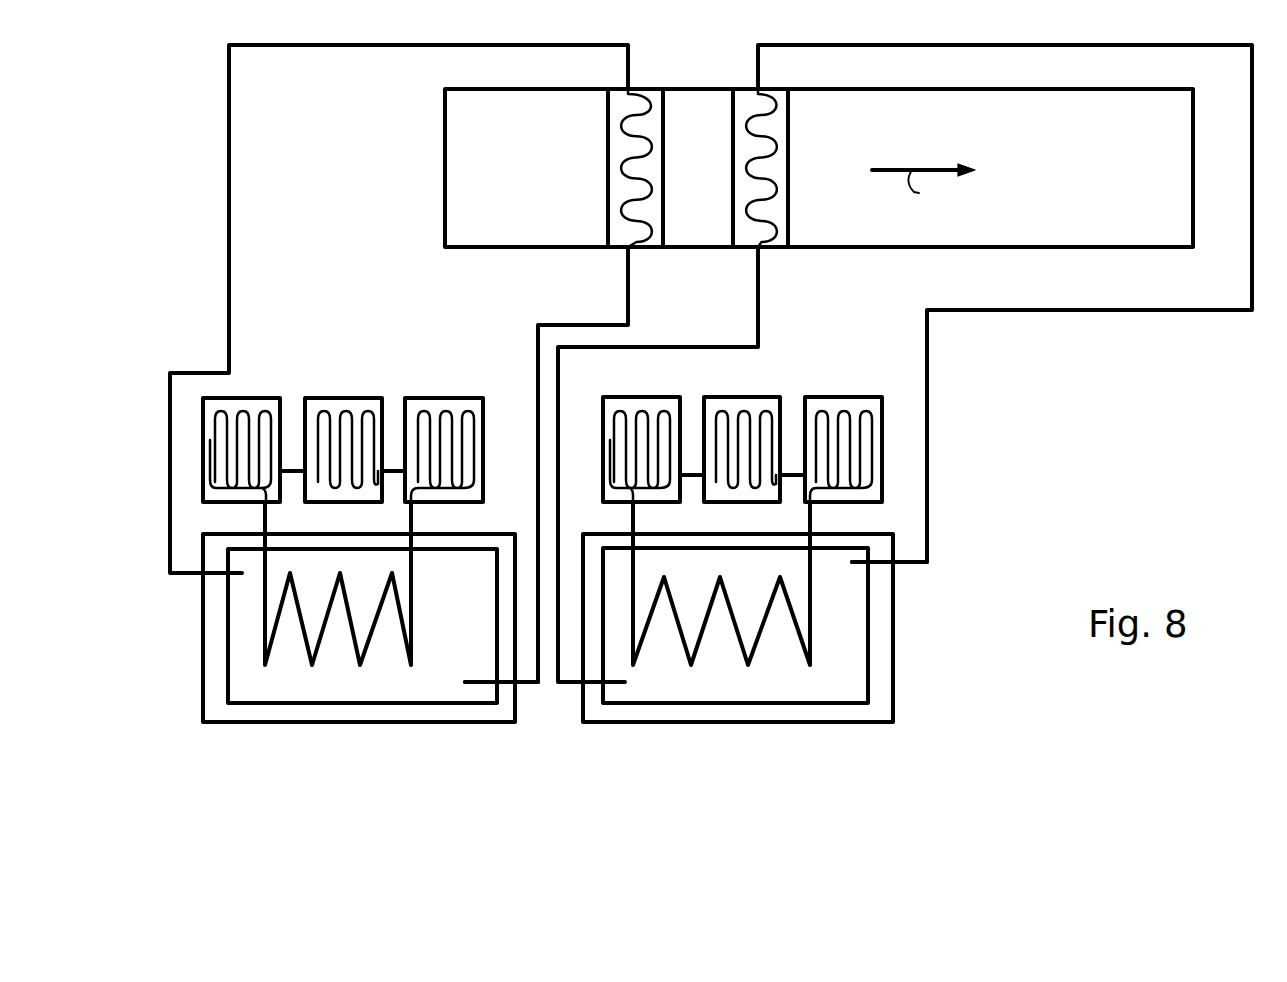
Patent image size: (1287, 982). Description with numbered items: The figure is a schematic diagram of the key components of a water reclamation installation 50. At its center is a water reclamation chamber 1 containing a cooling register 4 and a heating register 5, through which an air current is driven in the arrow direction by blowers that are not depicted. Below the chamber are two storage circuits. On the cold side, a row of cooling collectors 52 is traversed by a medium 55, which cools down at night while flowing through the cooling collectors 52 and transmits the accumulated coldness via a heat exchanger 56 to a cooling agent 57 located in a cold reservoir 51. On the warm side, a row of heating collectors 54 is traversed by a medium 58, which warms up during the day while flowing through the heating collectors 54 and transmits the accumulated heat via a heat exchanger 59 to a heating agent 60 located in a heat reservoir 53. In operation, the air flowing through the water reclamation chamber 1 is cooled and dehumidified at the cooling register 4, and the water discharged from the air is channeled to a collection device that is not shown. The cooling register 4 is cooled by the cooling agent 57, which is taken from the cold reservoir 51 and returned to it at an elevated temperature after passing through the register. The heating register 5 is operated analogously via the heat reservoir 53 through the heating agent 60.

The water reclamation installation 50 is at (160, 120).
The water reclamation chamber 1 is at (470, 143).
The cooling register 4 is at (641, 102).
The heating register 5 is at (749, 98).
The cooling collectors 52 is at (253, 412).
The heating collectors 54 is at (637, 412).
The medium 55 is at (292, 468).
The medium 58 is at (790, 470).
The cold reservoir 51 is at (283, 712).
The heat reservoir 53 is at (681, 712).
The heat exchanger 56 is at (373, 630).
The cooling agent 57 is at (440, 680).
The heat exchanger 59 is at (758, 642).
The heating agent 60 is at (838, 670).